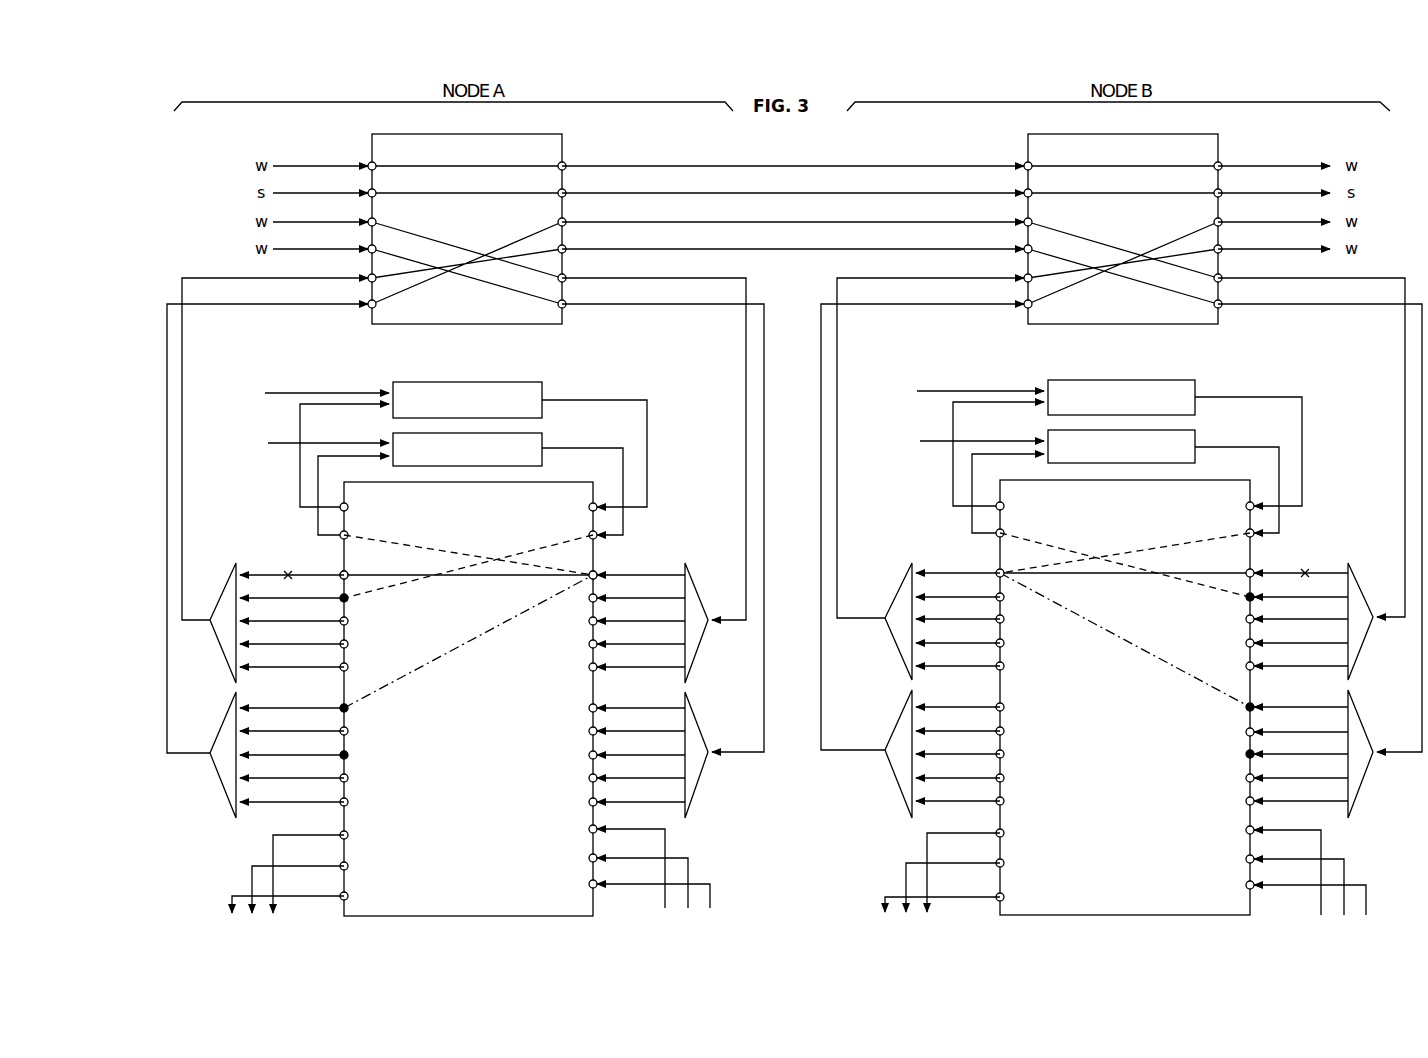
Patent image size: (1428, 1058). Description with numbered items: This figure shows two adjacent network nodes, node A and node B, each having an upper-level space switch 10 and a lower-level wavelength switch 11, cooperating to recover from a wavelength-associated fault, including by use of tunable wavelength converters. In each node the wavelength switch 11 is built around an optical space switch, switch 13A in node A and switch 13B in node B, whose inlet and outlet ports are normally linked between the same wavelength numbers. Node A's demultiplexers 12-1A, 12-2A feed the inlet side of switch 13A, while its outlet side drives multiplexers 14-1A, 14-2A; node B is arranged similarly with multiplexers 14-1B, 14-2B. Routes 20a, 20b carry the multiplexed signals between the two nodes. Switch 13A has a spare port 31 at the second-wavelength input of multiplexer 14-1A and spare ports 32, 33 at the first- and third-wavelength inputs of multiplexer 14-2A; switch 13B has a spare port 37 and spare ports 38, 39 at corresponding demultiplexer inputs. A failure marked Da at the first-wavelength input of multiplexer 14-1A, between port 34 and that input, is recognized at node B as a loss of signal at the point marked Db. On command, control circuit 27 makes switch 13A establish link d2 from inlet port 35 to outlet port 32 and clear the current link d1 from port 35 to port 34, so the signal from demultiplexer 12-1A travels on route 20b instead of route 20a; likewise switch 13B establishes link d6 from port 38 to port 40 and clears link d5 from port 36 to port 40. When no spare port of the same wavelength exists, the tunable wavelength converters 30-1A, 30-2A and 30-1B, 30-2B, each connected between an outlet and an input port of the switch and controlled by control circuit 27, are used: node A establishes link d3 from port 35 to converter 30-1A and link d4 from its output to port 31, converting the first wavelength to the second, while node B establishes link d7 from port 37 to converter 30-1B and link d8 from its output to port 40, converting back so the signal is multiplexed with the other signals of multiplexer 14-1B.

The space switch 10 is at (795, 217).
The wavelength switch 11 is at (686, 370).
The switch 13A is at (490, 902).
The switch 13B is at (1146, 901).
The demultiplexer 12-1A is at (702, 548).
The demultiplexer 12-2A is at (698, 732).
The multiplexer 14-1A is at (234, 570).
The multiplexer 14-2A is at (228, 788).
The multiplexer 14-1B is at (906, 570).
The multiplexer 14-2B is at (898, 733).
The route 20a is at (748, 221).
The route 20b is at (748, 248).
The control circuit 27 is at (620, 420).
The tunable wavelength converter 30-1A is at (542, 440).
The tunable wavelength converter 30-2A is at (542, 388).
The tunable wavelength converter 30-1B is at (1195, 440).
The tunable wavelength converter 30-2B is at (1195, 386).
The spare port 31 is at (341, 596).
The spare port 32 is at (341, 706).
The spare port 33 is at (341, 753).
The outlet port 34 is at (342, 572).
The inlet port 35 is at (596, 572).
The port 36 is at (1253, 571).
The spare port 37 is at (1254, 595).
The spare port 38 is at (1254, 705).
The spare port 39 is at (1254, 752).
The port 40 is at (997, 571).
The link d1 is at (372, 575).
The link d2 is at (437, 660).
The link d3 is at (408, 545).
The link d4 is at (552, 543).
The link d5 is at (1183, 573).
The link d6 is at (1150, 652).
The link d7 is at (1062, 552).
The link d8 is at (1133, 552).
The failure point Da is at (288, 563).
The failure point Db is at (1304, 559).